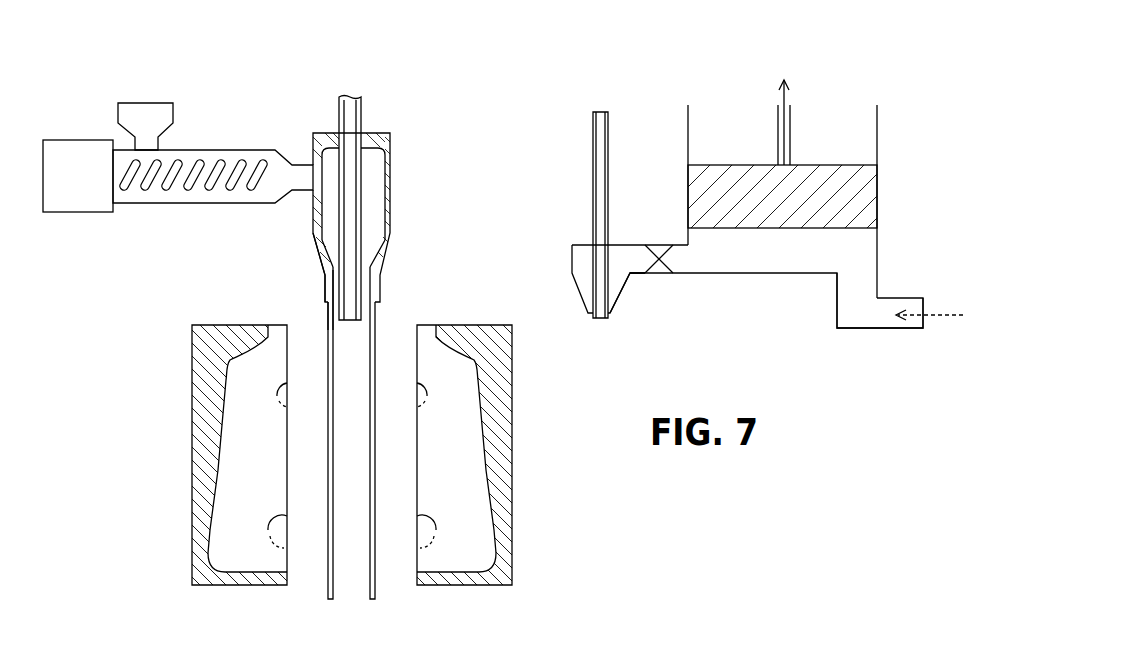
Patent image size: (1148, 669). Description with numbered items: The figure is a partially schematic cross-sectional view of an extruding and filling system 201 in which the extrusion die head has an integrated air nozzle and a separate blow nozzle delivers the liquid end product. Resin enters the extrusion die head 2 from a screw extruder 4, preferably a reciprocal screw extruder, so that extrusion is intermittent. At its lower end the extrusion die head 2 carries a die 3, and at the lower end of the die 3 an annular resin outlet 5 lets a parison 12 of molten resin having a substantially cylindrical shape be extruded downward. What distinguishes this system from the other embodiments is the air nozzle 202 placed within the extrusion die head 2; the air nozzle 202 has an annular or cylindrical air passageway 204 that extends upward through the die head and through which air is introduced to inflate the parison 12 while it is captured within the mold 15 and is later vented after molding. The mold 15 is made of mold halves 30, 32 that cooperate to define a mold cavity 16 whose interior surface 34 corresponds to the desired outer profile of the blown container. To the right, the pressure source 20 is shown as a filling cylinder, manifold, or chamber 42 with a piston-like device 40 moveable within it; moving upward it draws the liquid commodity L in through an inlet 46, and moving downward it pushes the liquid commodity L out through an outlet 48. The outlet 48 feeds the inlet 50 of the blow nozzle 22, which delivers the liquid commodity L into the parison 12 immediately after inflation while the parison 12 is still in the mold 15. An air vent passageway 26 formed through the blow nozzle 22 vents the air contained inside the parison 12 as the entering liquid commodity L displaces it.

The extruding and filling system 201 is at (178, 117).
The screw extruder 4 is at (253, 148).
The extrusion die head 2 is at (378, 186).
The air passageway 204 is at (353, 193).
The air nozzle 202 is at (368, 290).
The die 3 is at (325, 277).
The annular resin outlet 5 is at (330, 303).
The parison 12 is at (326, 454).
The mold 15 is at (381, 417).
The mold half 30 is at (269, 455).
The mold half 32 is at (464, 453).
The interior surface 34 is at (218, 473).
The mold cavity 16 is at (478, 387).
The pressure source 20 is at (878, 141).
The air vent passageway 26 is at (600, 138).
The filling cylinder, manifold, or chamber 42 is at (728, 142).
The piston-like device 40 is at (858, 198).
The liquid commodity L is at (857, 252).
The outlet 48 is at (677, 250).
The inlet 50 is at (638, 270).
The blow nozzle 22 is at (594, 281).
The inlet 46 is at (898, 323).